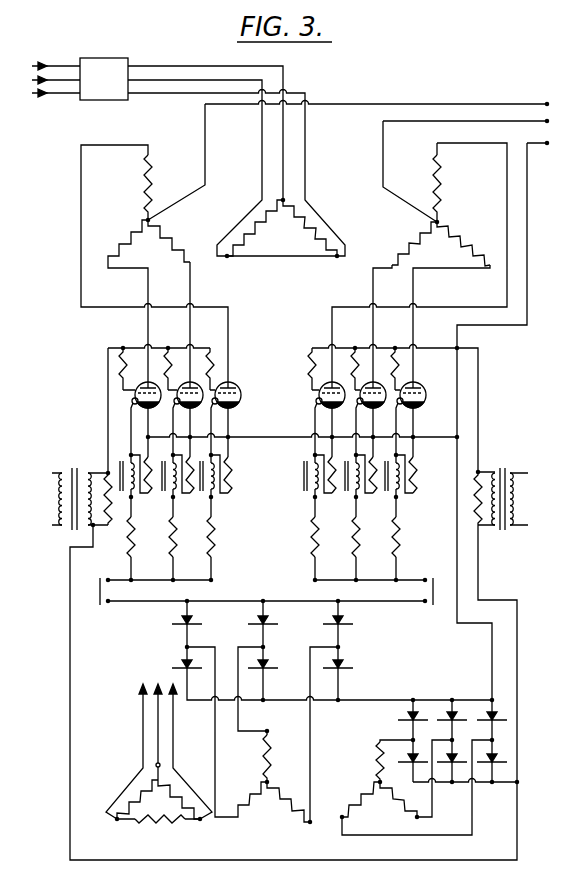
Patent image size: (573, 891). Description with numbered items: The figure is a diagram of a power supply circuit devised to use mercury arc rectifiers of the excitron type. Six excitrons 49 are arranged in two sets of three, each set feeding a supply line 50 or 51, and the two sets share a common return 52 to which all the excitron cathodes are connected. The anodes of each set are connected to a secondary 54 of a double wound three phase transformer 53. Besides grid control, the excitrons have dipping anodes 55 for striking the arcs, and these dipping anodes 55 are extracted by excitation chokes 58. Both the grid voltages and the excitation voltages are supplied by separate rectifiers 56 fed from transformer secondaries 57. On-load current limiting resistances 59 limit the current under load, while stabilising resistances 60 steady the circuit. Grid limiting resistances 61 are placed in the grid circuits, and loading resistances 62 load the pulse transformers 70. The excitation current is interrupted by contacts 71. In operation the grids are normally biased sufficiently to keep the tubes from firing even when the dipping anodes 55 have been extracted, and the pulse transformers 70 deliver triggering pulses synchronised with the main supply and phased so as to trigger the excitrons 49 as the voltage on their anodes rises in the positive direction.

The excitrons 49 is at (134, 395).
The supply line 50 is at (478, 101).
The supply line 51 is at (413, 121).
The common return 52 is at (541, 221).
The double wound three phase transformer 53 is at (310, 228).
The secondary 54 is at (127, 237).
The dipping anodes 55 is at (131, 403).
The rectifiers 56 is at (184, 644).
The transformer secondaries 57 is at (283, 803).
The excitation chokes 58 is at (313, 488).
The on-load current limiting resistances 59 is at (216, 552).
The stabilising resistances 60 is at (234, 472).
The grid limiting resistances 61 is at (117, 372).
The loading resistances 62 is at (110, 513).
The pulse transformers 70 is at (538, 500).
The contacts 71 is at (104, 610).